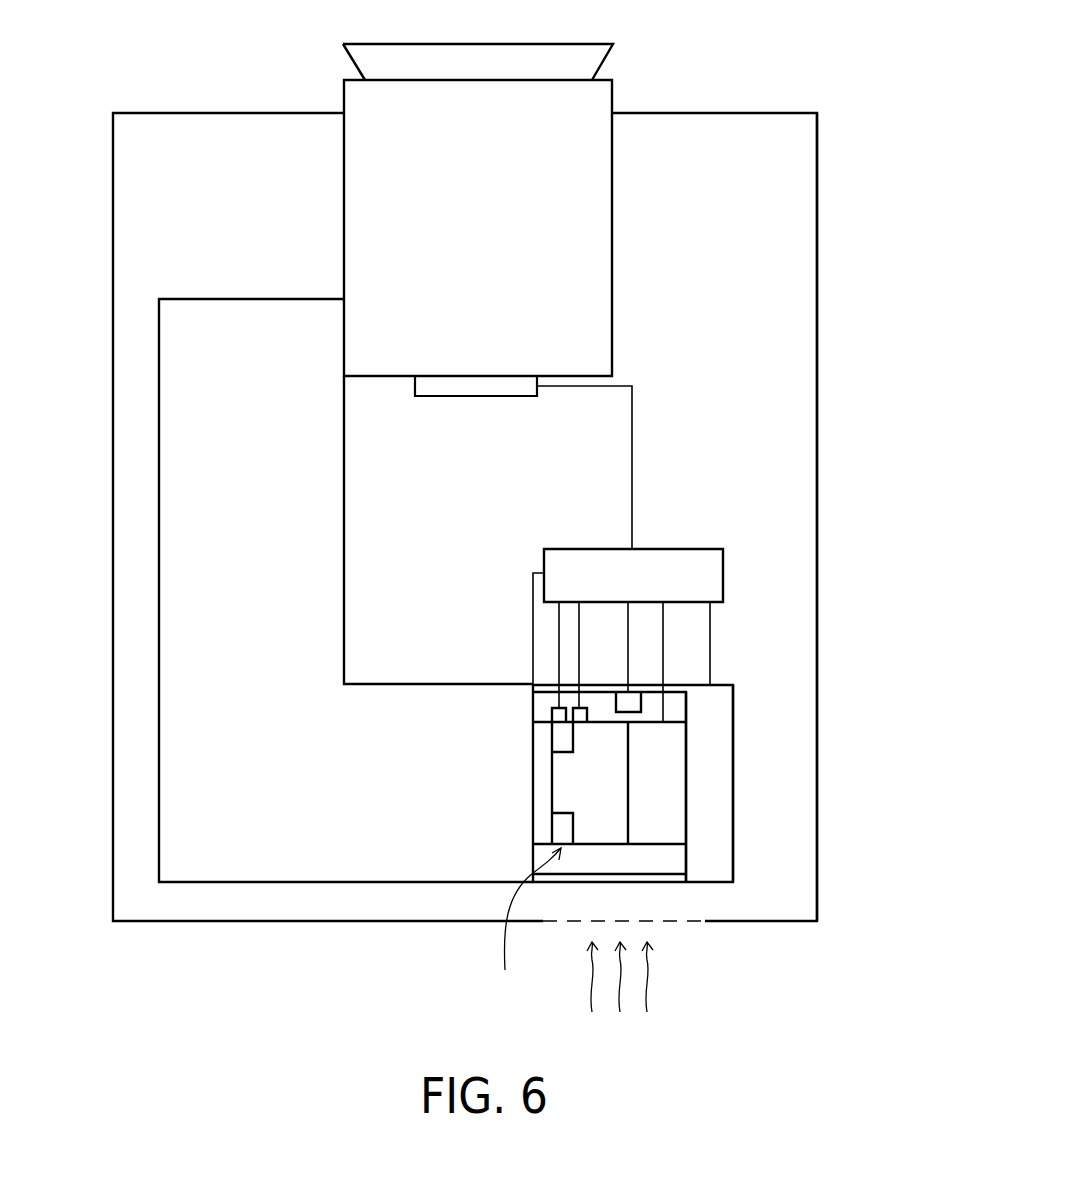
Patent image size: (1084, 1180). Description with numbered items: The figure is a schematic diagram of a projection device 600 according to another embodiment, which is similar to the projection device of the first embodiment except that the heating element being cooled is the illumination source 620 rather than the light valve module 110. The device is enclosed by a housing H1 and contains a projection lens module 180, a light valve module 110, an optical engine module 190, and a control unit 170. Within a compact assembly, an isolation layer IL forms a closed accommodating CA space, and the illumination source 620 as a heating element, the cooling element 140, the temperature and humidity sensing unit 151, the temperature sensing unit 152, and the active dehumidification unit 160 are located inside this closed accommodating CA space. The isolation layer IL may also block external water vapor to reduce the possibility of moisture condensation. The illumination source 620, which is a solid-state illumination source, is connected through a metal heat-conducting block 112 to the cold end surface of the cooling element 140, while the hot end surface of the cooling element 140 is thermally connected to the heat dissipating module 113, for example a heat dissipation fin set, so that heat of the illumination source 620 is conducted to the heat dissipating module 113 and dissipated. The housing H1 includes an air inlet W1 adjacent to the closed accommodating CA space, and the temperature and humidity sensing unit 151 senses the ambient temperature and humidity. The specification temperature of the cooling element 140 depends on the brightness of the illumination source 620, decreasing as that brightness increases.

The projection lens module 180 is at (597, 63).
The light valve module 110 is at (479, 397).
The control unit 170 is at (717, 577).
The active dehumidification unit 160 is at (632, 700).
The temperature sensing unit 152 is at (577, 712).
The temperature and humidity sensing unit 151 is at (546, 713).
The isolation layer IL is at (673, 688).
The housing H1 is at (818, 689).
The heat dissipating module 113 is at (727, 782).
The cooling element 140 is at (663, 823).
The optical engine module 190 is at (345, 884).
The illumination source 620 is at (539, 777).
The metal heat-conducting block 112 is at (582, 797).
The closed accommodating space CA is at (525, 924).
The air inlet W1 is at (689, 942).
The projection device 600 is at (886, 1028).